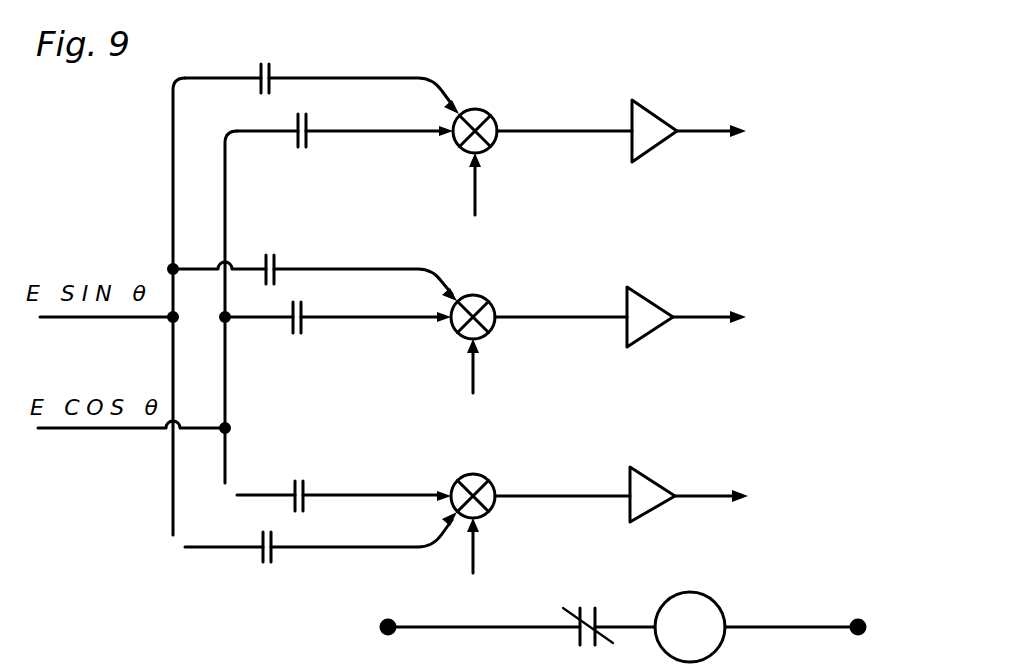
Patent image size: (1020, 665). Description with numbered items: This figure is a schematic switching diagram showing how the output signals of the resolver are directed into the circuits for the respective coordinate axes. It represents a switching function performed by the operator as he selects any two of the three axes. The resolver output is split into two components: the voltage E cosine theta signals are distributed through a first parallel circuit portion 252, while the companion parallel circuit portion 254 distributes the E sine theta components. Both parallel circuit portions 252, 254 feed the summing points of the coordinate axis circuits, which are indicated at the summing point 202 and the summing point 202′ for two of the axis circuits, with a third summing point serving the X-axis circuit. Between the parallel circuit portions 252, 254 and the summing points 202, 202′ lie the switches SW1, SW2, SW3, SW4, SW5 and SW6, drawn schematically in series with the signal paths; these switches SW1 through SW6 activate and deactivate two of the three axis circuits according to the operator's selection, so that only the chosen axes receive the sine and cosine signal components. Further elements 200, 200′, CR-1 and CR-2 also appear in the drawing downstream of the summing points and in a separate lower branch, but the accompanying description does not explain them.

The switch SW1 is at (270, 68).
The switch SW2 is at (306, 146).
The switch SW3 is at (278, 257).
The switch SW4 is at (301, 333).
The switch SW5 is at (306, 482).
The switch SW6 is at (271, 561).
The summing point 202′ is at (492, 300).
The summing point 202 is at (488, 481).
The amplifier 200′ is at (655, 301).
The amplifier 200 is at (655, 483).
The first parallel circuit portion 252 is at (226, 416).
The companion parallel circuit portion 254 is at (172, 351).
The variable capacitor CR-1 is at (586, 606).
The element CR-2 is at (756, 627).